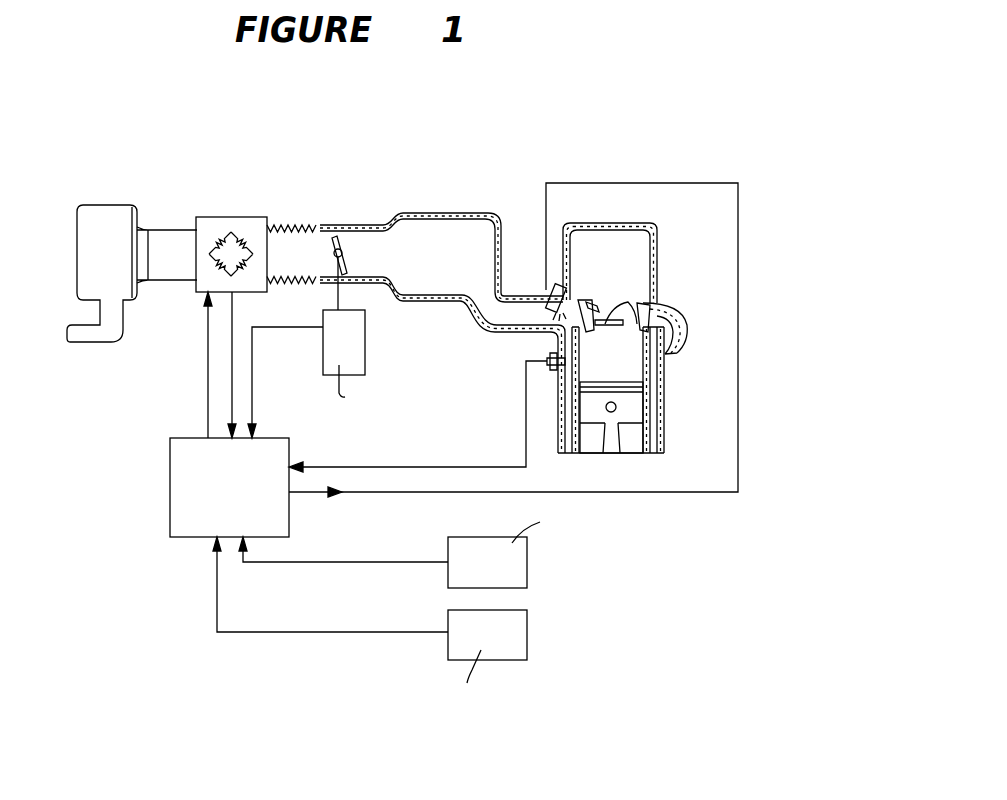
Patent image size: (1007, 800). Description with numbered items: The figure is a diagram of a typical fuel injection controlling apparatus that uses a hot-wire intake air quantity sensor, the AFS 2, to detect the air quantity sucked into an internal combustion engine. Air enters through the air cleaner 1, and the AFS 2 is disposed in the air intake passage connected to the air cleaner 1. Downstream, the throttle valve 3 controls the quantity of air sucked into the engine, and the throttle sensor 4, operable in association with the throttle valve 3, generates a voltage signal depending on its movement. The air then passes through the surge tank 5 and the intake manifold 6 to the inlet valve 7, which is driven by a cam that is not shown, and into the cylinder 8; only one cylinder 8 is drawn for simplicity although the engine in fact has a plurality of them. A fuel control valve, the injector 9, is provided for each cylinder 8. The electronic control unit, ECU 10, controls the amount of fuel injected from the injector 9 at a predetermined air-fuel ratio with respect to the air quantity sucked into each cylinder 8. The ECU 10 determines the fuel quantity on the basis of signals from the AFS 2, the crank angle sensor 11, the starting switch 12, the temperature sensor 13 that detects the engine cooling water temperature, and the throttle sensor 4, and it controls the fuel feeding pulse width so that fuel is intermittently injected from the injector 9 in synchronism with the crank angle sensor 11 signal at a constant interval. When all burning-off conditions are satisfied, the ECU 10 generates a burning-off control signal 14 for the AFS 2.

The air cleaner 1 is at (112, 215).
The hot-wire intake air quantity sensor (AFS) 2 is at (233, 216).
The throttle valve 3 is at (338, 235).
The throttle sensor 4 is at (367, 333).
The surge tank 5 is at (432, 243).
The intake manifold 6 is at (490, 314).
The inlet valve 7 is at (597, 290).
The cylinder 8 is at (627, 365).
The fuel control valve (injector) 9 is at (550, 290).
The electronic control unit (ECU) 10 is at (172, 505).
The crank angle sensor 11 is at (527, 560).
The starting switch 12 is at (527, 634).
The temperature sensor 13 is at (547, 358).
The burning-off control signal 14 is at (208, 383).